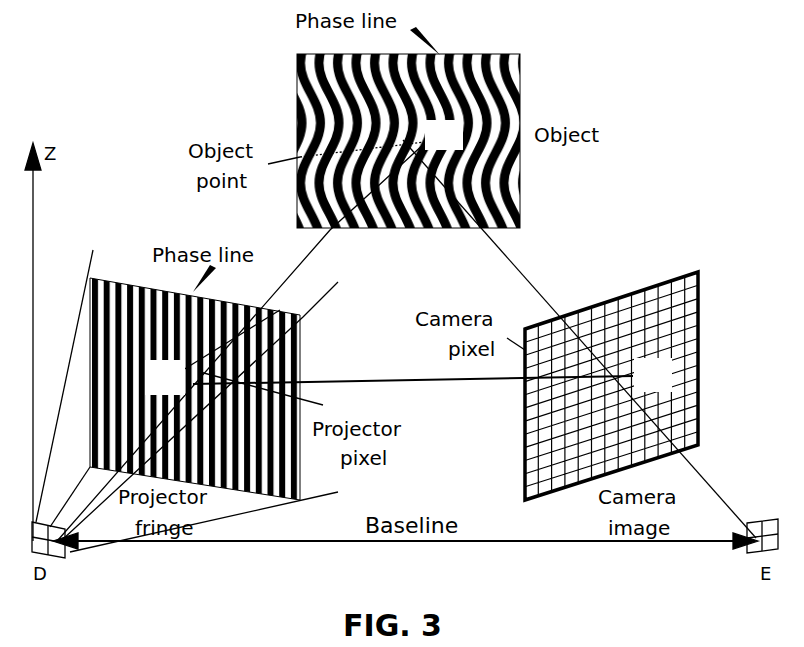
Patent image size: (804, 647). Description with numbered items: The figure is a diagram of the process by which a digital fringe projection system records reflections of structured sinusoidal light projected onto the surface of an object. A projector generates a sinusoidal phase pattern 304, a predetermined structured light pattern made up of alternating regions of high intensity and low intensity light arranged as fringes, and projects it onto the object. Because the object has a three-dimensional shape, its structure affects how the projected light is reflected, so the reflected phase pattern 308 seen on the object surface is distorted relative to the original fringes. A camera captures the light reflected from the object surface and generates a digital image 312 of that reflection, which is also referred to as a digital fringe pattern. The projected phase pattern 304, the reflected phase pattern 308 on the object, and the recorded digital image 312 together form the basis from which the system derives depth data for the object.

The sinusoidal phase pattern 304 is at (135, 282).
The phase pattern 308 is at (520, 83).
The digital image 312 is at (700, 317).